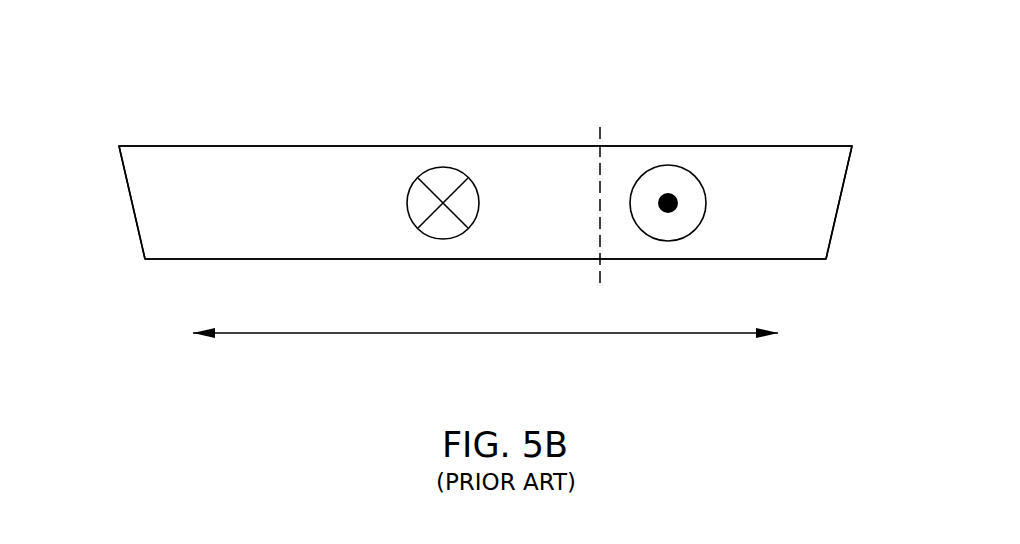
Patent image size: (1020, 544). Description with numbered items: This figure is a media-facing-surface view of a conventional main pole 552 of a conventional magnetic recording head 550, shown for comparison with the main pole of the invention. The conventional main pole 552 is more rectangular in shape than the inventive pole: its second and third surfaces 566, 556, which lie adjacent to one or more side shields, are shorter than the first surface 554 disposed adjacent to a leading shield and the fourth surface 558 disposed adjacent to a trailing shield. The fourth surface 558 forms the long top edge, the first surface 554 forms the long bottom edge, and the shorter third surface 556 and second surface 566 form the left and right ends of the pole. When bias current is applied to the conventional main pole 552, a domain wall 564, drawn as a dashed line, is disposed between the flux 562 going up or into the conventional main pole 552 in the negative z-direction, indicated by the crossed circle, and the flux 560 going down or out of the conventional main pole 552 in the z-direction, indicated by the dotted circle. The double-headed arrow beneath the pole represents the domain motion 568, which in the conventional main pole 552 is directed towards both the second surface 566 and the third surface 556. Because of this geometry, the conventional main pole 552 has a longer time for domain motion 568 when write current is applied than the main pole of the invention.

The conventional magnetic recording head 550 is at (592, 85).
The conventional main pole 552 is at (291, 208).
The first surface 554 is at (283, 259).
The third surface 556 is at (132, 213).
The fourth surface 558 is at (358, 145).
The flux 560 is at (652, 166).
The flux 562 is at (478, 207).
The domain wall 564 is at (599, 192).
The second surface 566 is at (839, 202).
The domain motion 568 is at (453, 333).